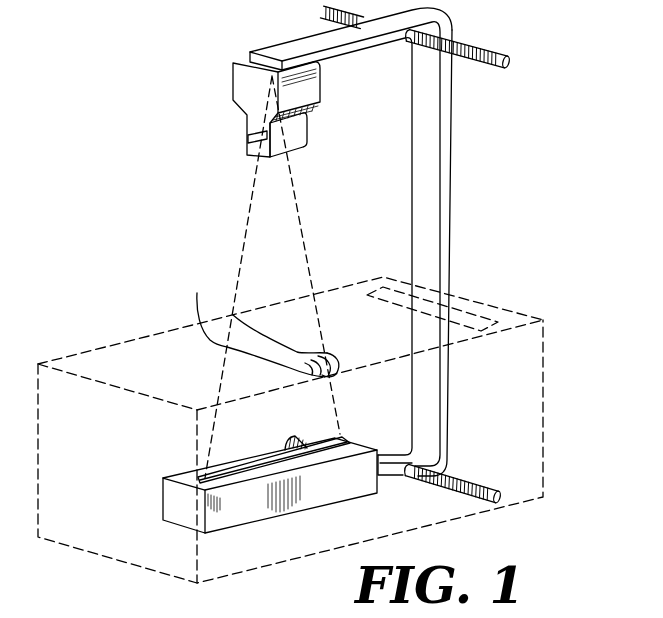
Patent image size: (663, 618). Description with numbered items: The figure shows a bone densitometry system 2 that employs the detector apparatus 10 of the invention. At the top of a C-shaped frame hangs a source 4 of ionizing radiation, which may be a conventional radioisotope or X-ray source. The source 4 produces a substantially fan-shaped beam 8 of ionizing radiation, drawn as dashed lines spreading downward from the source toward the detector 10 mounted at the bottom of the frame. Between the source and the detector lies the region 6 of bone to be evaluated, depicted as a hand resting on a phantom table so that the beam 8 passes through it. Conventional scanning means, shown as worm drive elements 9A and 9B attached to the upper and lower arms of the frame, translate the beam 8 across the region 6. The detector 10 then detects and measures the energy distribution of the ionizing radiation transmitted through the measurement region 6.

The bone densitometry system 2 is at (517, 39).
The source of ionizing radiation 4 is at (257, 87).
The region of bone to be evaluated 6 is at (266, 352).
The fan-shaped beam of ionizing radiation 8 is at (280, 200).
The worm drive element 9A is at (488, 66).
The worm drive element 9B is at (463, 484).
The detector apparatus 10 is at (173, 494).